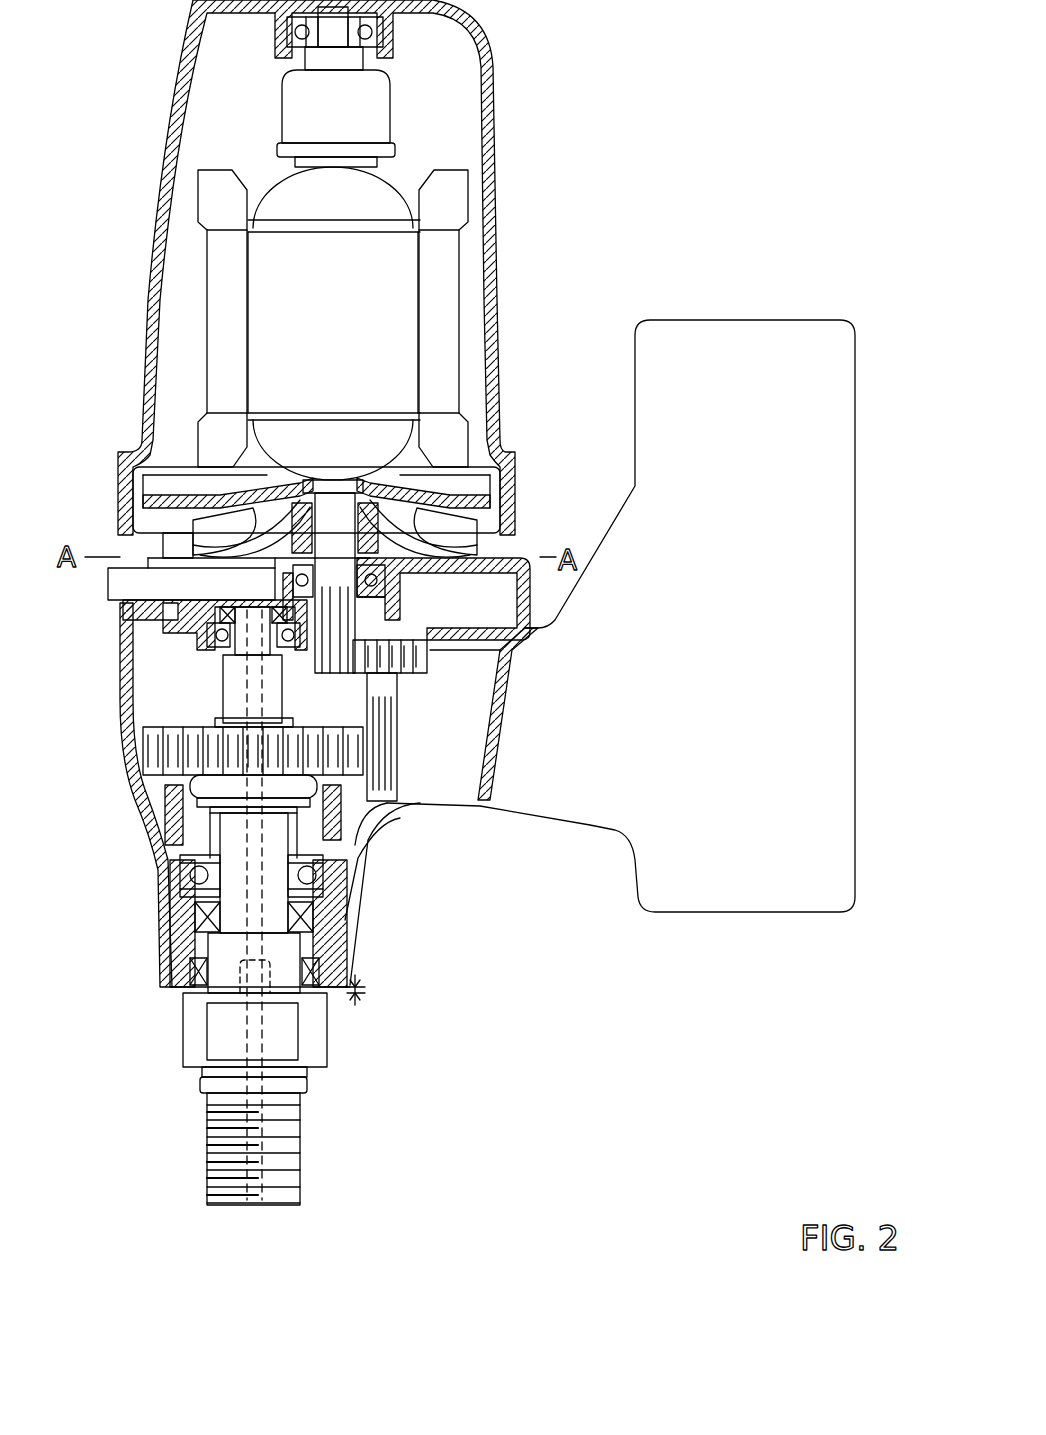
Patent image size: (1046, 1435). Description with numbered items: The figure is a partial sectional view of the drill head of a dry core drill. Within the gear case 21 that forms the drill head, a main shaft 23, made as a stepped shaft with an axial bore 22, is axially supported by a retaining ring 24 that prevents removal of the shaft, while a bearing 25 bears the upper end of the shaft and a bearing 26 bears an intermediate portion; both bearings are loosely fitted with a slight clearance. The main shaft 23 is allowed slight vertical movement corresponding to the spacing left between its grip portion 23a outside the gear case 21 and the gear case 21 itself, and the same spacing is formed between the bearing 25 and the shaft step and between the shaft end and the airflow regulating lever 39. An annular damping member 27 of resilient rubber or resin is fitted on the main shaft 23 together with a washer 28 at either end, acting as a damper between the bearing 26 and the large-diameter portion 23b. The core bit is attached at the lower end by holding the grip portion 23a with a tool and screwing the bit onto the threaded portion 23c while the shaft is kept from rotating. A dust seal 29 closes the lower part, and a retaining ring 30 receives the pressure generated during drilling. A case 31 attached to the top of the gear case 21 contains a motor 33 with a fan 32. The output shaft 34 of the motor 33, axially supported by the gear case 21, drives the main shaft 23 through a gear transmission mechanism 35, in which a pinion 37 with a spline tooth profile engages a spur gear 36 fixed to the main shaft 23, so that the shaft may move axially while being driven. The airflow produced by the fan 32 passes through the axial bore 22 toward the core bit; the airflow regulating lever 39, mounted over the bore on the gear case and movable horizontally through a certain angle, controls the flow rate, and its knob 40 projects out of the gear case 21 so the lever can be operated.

The gear case 21 is at (123, 668).
The axial bore 22 is at (262, 688).
The main shaft 23 is at (290, 915).
The grip portion 23a is at (327, 1047).
The large-diameter portion 23b is at (220, 956).
The threaded portion 23c is at (300, 1160).
The retaining ring 24 is at (222, 720).
The bearing 25 is at (225, 640).
The bearing 26 is at (315, 880).
The annular damping member 27 is at (200, 906).
The washer 28 is at (195, 882).
The dust seal 29 is at (195, 985).
The retaining ring 30 is at (345, 840).
The case 31 is at (492, 142).
The fan 32 is at (505, 480).
The motor 33 is at (410, 330).
The output shaft 34 is at (435, 570).
The gear transmission mechanism 35 is at (441, 651).
The spur gear 36 is at (160, 763).
The pinion 37 is at (400, 763).
The airflow regulating lever 39 is at (160, 620).
The knob 40 is at (108, 580).